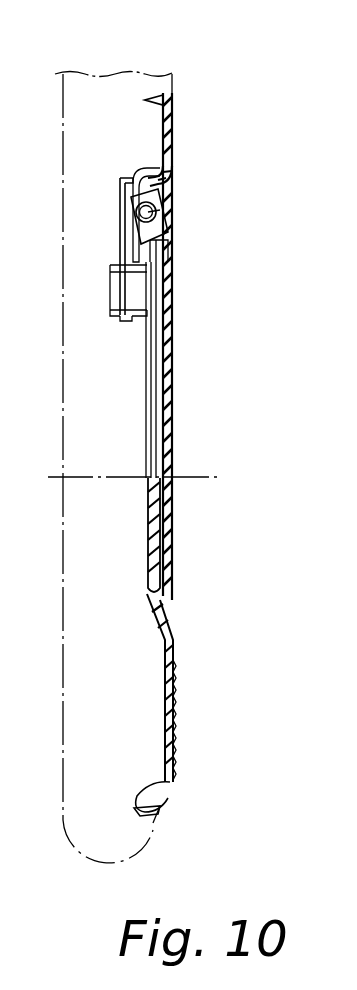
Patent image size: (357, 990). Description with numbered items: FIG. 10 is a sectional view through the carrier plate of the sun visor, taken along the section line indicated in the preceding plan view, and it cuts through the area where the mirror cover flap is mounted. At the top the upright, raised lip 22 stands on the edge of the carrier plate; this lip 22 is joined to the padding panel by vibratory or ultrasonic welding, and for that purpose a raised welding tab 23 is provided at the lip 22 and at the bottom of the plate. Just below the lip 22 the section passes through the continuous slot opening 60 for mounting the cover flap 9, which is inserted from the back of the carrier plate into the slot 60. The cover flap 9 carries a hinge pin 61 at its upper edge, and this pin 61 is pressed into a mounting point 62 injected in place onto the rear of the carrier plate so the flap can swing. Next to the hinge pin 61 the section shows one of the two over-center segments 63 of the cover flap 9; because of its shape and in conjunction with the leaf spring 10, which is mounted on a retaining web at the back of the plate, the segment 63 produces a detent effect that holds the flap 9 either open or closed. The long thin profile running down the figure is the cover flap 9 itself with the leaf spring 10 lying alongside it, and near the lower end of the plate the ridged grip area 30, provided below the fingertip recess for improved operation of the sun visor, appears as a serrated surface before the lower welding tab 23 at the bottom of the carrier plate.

The cover flap 9 is at (172, 412).
The leaf spring 10 is at (135, 302).
The raised lip 22 is at (177, 92).
The welding tab 23 is at (167, 783).
The ridged grip area 30 is at (167, 790).
The slot opening 60 is at (167, 183).
The hinge pin 61 is at (167, 208).
The mounting point 62 is at (167, 255).
The over-center segment 63 is at (172, 157).